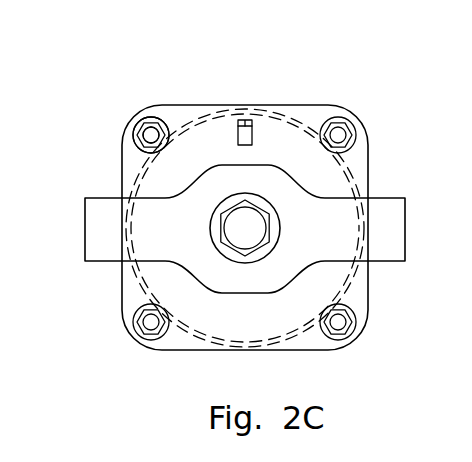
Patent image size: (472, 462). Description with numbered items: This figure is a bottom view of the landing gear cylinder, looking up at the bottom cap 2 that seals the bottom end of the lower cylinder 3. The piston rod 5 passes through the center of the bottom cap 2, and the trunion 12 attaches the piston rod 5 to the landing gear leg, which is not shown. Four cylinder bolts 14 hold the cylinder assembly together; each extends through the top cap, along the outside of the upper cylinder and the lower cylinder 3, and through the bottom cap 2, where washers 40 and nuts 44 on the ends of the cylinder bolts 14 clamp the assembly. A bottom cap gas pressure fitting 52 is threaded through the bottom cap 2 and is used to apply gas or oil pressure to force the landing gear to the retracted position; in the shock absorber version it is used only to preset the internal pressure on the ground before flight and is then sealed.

The bottom cap 2 is at (199, 105).
The lower cylinder 3 is at (357, 183).
The piston rod 5 is at (258, 245).
The trunion 12 is at (85, 198).
The cylinder bolts 14 is at (133, 135).
The washers 40 is at (162, 122).
The nuts 44 is at (138, 122).
The bottom cap gas pressure fitting 52 is at (250, 116).